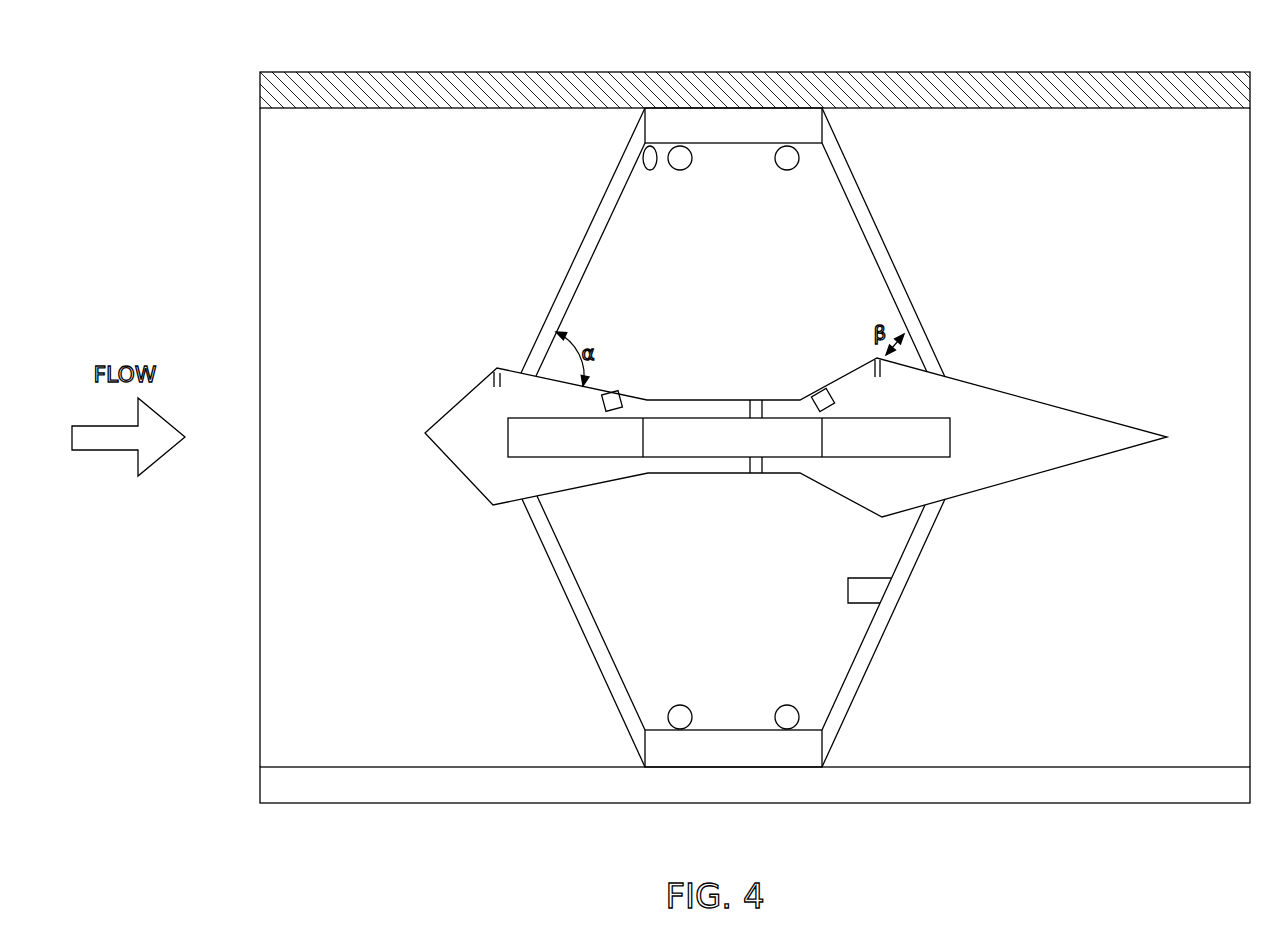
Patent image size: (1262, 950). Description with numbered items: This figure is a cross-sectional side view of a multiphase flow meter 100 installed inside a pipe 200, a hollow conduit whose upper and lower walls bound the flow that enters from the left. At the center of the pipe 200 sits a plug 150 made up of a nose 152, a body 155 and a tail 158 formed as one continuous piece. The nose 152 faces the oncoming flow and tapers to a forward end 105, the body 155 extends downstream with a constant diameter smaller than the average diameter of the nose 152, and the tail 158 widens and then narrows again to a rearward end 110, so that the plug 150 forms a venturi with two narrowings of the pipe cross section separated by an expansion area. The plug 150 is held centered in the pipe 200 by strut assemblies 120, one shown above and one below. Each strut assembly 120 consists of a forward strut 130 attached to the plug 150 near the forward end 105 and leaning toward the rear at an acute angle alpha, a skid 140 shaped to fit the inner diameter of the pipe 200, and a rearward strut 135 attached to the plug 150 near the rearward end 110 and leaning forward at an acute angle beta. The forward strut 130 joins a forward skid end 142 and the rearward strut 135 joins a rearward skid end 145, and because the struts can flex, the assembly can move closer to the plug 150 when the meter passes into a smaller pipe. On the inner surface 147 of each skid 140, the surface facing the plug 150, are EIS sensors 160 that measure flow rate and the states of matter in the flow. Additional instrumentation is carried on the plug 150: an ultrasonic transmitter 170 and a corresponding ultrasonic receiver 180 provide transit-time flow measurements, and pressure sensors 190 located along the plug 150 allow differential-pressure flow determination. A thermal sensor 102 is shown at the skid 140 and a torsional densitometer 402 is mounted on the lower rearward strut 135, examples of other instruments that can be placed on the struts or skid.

The multiphase flow meter 100 is at (1115, 208).
The thermal sensor 102 is at (643, 162).
The forward end 105 is at (416, 429).
The rearward end 110 is at (1163, 456).
The strut assembly 120 is at (566, 206).
The forward strut 130 is at (557, 274).
The rearward strut 135 is at (918, 272).
The skid 140 is at (722, 132).
The forward skid end 142 is at (641, 112).
The rearward skid end 145 is at (836, 122).
The inner surface 147 is at (770, 146).
The plug 150 is at (1122, 410).
The nose 152 is at (470, 498).
The body 155 is at (670, 400).
The tail 158 is at (1000, 487).
The EIS sensor 160 is at (678, 172).
The ultrasonic transmitter 170 is at (822, 391).
The ultrasonic receiver 180 is at (613, 392).
The pressure sensor 190 is at (492, 374).
The pipe 200 is at (1058, 72).
The torsional densitometer 402 is at (893, 590).